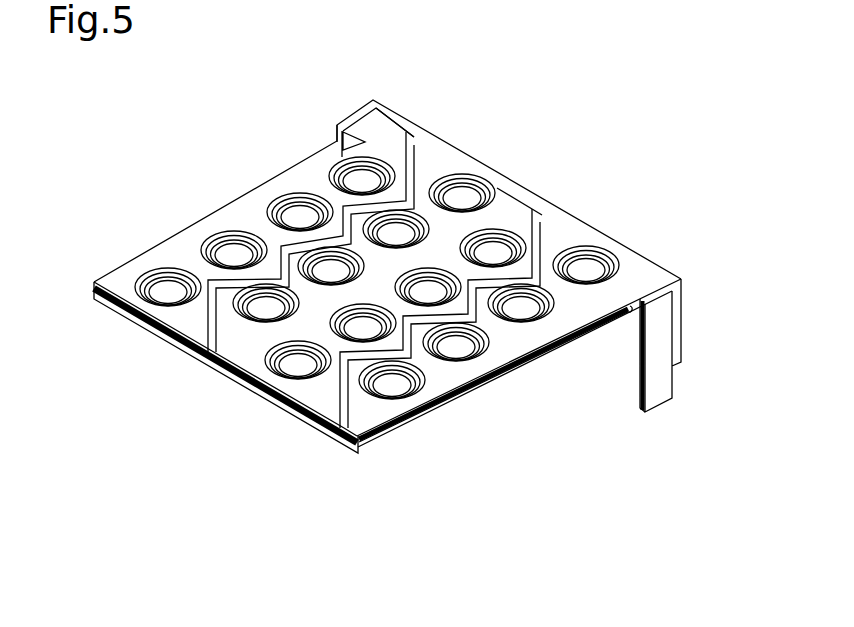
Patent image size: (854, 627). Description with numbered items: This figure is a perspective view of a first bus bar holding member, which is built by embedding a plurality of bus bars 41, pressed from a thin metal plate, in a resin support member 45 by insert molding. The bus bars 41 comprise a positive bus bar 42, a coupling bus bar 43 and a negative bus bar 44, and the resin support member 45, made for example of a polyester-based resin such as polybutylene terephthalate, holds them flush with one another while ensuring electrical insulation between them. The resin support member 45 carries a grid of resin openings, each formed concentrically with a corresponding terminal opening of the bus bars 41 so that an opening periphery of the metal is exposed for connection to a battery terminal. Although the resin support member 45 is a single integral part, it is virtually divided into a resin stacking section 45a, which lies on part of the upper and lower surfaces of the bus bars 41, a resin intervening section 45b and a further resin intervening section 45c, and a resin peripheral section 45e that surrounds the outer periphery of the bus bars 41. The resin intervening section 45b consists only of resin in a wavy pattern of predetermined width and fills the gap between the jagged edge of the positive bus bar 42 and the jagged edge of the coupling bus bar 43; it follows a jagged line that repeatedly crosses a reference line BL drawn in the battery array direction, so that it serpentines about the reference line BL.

The bus bars 41 is at (223, 112).
The positive bus bar 42 is at (313, 181).
The coupling bus bar 43 is at (247, 258).
The negative bus bar 44 is at (503, 329).
The resin support member 45 is at (78, 395).
The resin stacking section 45a is at (240, 372).
The resin intervening section 45b is at (183, 353).
The resin intervening section 45c is at (340, 393).
The resin peripheral section 45e is at (403, 432).
The reference line BL is at (145, 323).